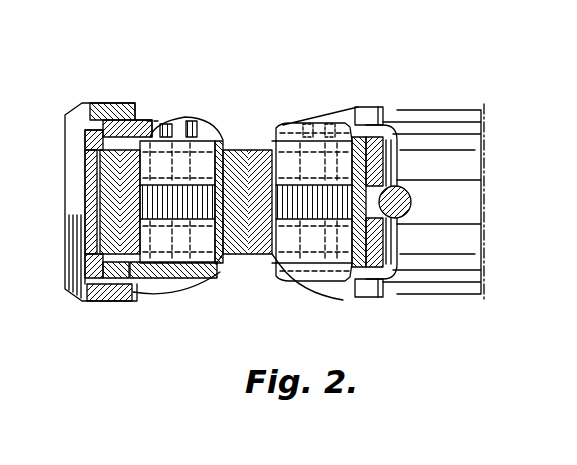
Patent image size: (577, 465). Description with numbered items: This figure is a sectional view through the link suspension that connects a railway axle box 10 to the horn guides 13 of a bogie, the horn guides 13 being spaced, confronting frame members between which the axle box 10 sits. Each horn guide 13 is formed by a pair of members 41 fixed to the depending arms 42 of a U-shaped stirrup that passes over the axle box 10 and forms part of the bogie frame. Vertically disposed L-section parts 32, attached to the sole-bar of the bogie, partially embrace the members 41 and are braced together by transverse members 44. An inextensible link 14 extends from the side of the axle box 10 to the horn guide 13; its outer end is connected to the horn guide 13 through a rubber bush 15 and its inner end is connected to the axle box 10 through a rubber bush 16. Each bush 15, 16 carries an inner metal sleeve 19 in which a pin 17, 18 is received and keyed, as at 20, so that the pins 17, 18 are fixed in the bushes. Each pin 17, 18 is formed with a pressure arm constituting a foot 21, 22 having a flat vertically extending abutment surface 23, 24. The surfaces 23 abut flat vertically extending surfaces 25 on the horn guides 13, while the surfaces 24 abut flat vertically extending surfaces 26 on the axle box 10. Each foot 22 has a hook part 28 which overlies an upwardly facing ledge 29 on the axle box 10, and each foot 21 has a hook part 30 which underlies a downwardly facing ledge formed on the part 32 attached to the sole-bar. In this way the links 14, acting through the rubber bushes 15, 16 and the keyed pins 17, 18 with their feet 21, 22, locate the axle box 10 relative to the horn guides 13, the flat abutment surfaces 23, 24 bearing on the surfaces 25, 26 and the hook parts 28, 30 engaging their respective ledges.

The axle box 10 is at (476, 166).
The horn guides 13 is at (128, 103).
The inextensible links 14 is at (268, 135).
The rubber bush 15 is at (229, 256).
The rubber bush 16 is at (256, 256).
The pin 17 is at (191, 236).
The pin 18 is at (325, 240).
The inner metal sleeves 19 is at (242, 150).
The key 20 is at (288, 146).
The foot 21 is at (135, 120).
The foot 22 is at (354, 130).
The abutment surface 23 is at (152, 133).
The abutment surface 24 is at (394, 132).
The flat vertically extending surfaces 25 is at (150, 118).
The flat vertically extending surfaces 26 is at (368, 107).
The hook part 28 is at (383, 110).
The upwardly facing ledge 29 is at (396, 131).
The hook part 30 is at (148, 121).
The part 32 is at (108, 103).
The members 41 is at (139, 120).
The depending arms 42 is at (92, 178).
The transverse members 44 is at (72, 159).